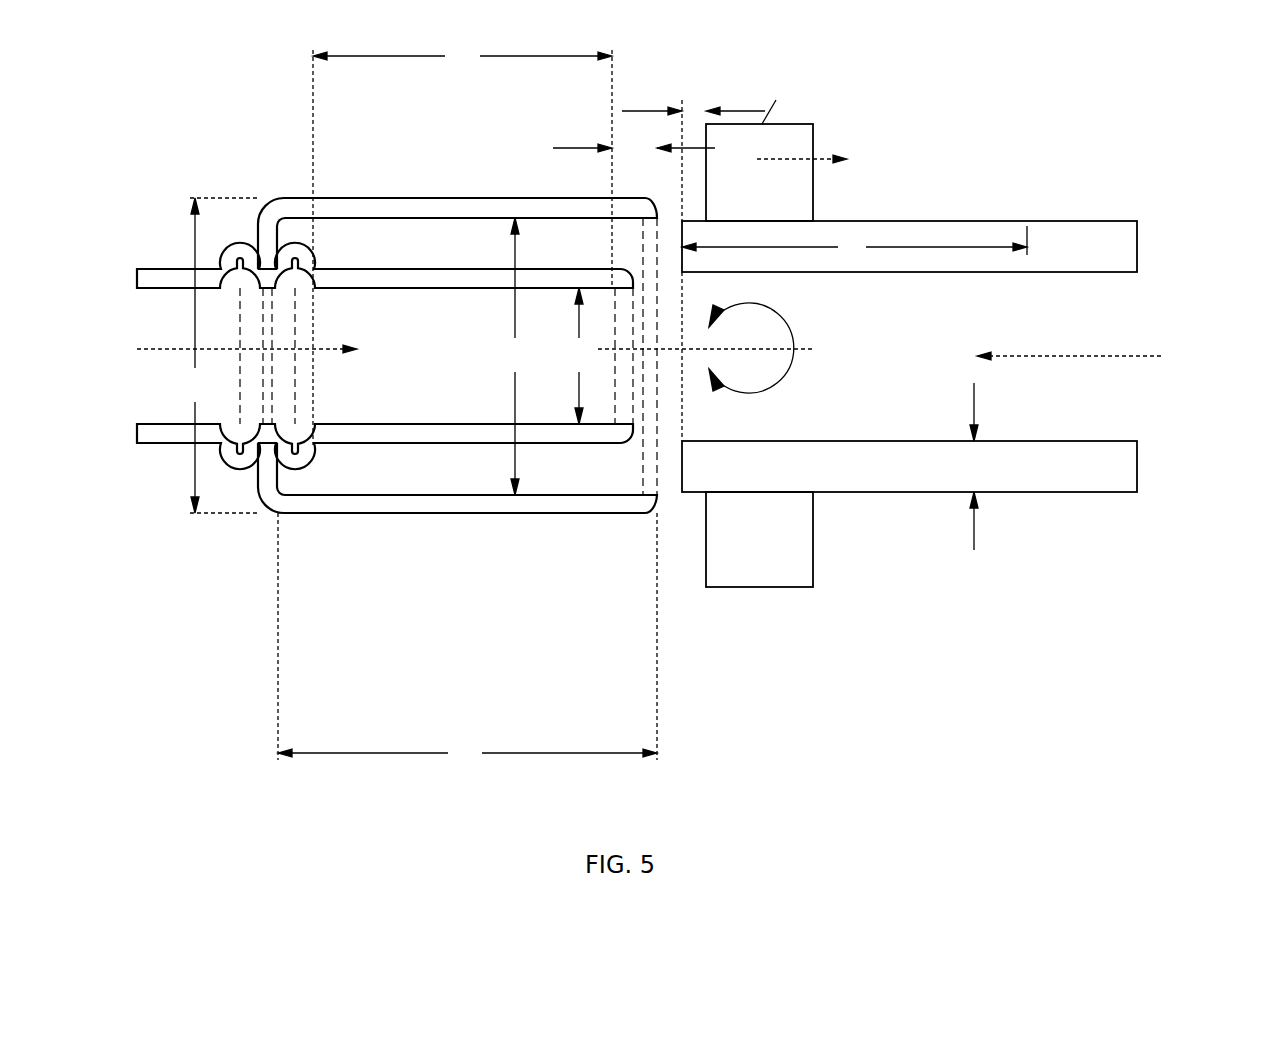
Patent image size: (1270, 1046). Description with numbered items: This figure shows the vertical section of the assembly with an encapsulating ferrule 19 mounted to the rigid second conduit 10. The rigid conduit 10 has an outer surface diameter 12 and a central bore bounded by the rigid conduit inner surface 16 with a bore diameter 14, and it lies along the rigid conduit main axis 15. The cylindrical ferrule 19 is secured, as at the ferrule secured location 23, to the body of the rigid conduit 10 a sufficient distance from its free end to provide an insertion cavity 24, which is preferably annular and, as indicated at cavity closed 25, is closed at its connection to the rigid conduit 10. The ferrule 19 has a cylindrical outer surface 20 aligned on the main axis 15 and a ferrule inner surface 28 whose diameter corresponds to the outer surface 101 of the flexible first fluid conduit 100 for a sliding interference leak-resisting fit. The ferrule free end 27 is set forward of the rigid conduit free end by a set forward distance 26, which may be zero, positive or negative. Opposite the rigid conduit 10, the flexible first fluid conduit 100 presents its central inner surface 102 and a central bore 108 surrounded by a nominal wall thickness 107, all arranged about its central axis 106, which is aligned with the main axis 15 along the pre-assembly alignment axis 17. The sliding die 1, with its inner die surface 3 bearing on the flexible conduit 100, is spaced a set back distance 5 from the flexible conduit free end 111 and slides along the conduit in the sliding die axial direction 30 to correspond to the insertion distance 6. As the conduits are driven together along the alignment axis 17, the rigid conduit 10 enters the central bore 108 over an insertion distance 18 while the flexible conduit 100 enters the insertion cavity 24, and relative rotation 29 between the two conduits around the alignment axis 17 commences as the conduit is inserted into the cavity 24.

The sliding die 1 is at (753, 153).
The inner die surface 3 is at (790, 221).
The set back distance 5 is at (693, 269).
The insertion distance 6 is at (854, 243).
The rigid second conduit 10 is at (375, 268).
The outer surface diameter 12 is at (354, 355).
The bore diameter 14 is at (578, 356).
The rigid conduit main axis 15 is at (150, 349).
The rigid conduit inner surface 16 is at (455, 430).
The pre-assembly alignment axis 17 is at (803, 350).
The insertion distance 18 is at (462, 243).
The ferrule 19 is at (347, 502).
The outer surface 20 is at (483, 205).
The ferrule secured 23 is at (268, 463).
The insertion cavity 24 is at (490, 248).
The cavity closed 25 is at (253, 197).
The set forward distance 26 is at (634, 148).
The free end 27 is at (657, 505).
The ferrule inner surface 28 is at (327, 478).
The relative rotation 29 is at (833, 312).
The sliding die axial direction 30 is at (842, 160).
The flexible first fluid conduit 100 is at (1105, 240).
The outer surface 101 is at (1069, 221).
The central inner surface 102 is at (1113, 272).
The central axis 106 is at (1163, 356).
The nominal wall thickness 107 is at (975, 466).
The central bore 108 is at (1113, 393).
The flexible conduit free end 111 is at (683, 466).